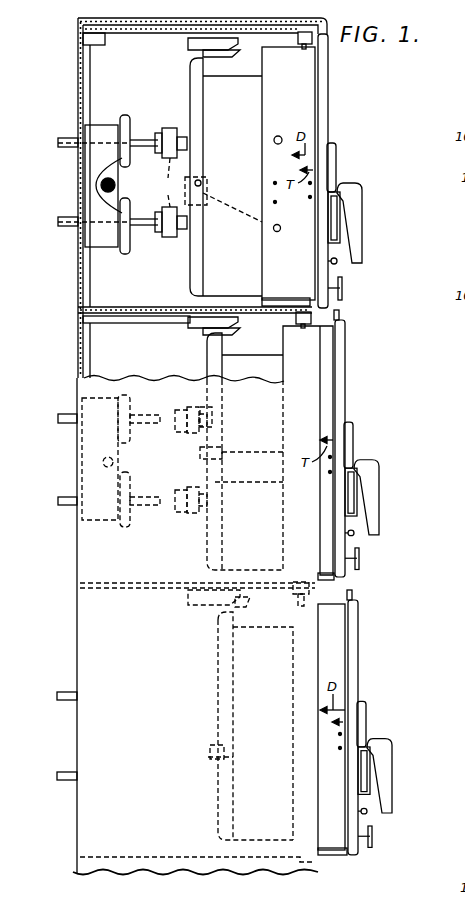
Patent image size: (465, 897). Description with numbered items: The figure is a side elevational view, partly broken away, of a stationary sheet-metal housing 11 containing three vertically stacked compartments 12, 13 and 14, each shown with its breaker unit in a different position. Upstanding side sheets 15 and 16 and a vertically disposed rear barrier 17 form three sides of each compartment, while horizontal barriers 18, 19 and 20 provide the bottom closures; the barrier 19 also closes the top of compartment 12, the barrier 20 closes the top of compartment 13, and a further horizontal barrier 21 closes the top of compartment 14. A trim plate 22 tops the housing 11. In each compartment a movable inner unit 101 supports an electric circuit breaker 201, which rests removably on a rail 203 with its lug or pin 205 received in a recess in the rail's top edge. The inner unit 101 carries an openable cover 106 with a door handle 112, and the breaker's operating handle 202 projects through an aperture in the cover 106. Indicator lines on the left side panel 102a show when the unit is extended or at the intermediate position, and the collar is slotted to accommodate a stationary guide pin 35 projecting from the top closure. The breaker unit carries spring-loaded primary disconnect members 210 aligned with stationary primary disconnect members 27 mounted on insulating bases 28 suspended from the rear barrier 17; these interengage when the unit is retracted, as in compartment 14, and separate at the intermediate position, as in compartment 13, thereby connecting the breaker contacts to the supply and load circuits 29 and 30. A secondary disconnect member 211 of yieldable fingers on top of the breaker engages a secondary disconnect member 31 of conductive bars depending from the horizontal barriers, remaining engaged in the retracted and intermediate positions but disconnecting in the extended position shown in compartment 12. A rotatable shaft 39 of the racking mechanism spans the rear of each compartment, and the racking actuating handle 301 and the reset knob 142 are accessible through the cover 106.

The housing 11 is at (66, 599).
The compartment 12 is at (168, 822).
The compartment 13 is at (163, 567).
The compartment 14 is at (156, 294).
The side sheet 15 is at (90, 735).
The side sheet 16 is at (98, 268).
The rear barrier 17 is at (78, 348).
The horizontal barrier 18 is at (95, 856).
The horizontal barrier 19 is at (98, 583).
The horizontal barrier 20 is at (102, 307).
The horizontal barrier 21 is at (100, 45).
The trim plate 22 is at (80, 19).
The stationary primary disconnect member 27 is at (143, 140).
The insulating base 28 is at (86, 180).
The supply circuit 29 is at (64, 138).
The load circuit 30 is at (68, 218).
The secondary disconnect member 31 is at (190, 47).
The guide pin 35 is at (303, 46).
The shaft 39 is at (116, 185).
The movable inner unit 101 is at (354, 111).
The left side panel 102a is at (270, 254).
The cover 106 is at (330, 72).
The door handle 112 is at (346, 186).
The reset knob 142 is at (338, 263).
The circuit breaker 201 is at (190, 259).
The operating handle 202 is at (358, 218).
The rail 203 is at (213, 202).
The lug or pin 205 is at (202, 184).
The primary disconnect member 210 is at (178, 442).
The secondary disconnect member 211 is at (212, 57).
The actuating handle 301 is at (342, 290).